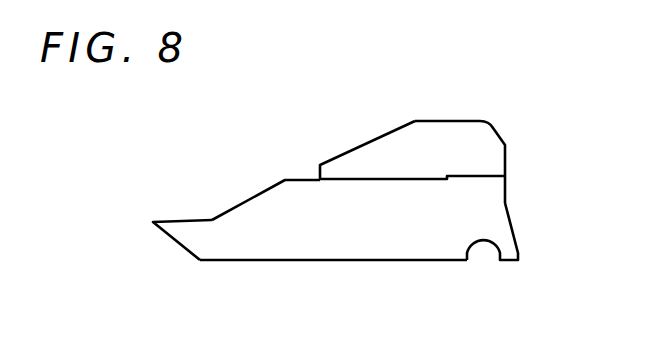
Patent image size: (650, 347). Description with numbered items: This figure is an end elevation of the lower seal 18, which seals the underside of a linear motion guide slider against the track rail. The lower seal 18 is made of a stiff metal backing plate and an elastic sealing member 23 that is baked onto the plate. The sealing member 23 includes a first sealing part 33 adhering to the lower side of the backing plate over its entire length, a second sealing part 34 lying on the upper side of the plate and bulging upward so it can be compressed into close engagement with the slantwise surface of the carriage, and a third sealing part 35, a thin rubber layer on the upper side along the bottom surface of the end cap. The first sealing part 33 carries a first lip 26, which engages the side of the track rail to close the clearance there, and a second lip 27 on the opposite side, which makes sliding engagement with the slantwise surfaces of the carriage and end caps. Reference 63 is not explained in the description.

The lower seal 18 is at (467, 114).
The sealing member 23 is at (303, 173).
The first lip 26 is at (510, 252).
The second lip 27 is at (168, 230).
The first sealing part 33 is at (423, 246).
The second sealing part 34 is at (477, 147).
The third sealing part 35 is at (485, 177).
The upper inclined portion 63 is at (355, 165).